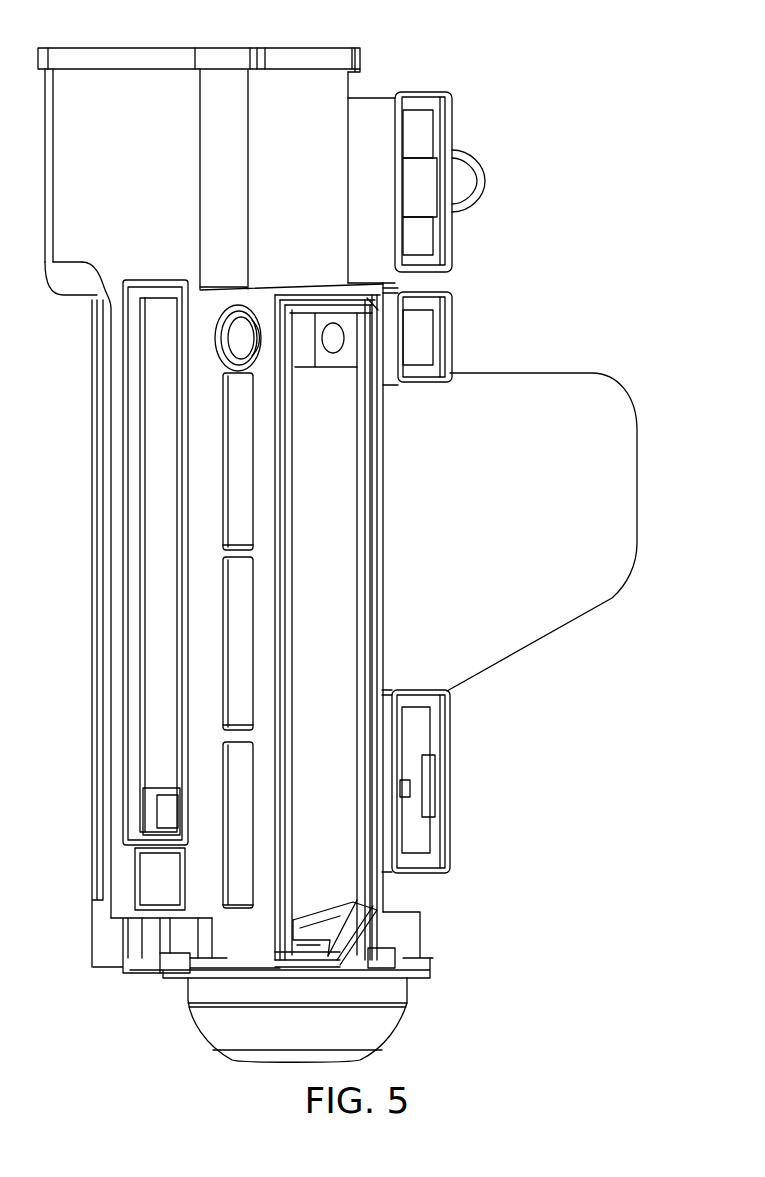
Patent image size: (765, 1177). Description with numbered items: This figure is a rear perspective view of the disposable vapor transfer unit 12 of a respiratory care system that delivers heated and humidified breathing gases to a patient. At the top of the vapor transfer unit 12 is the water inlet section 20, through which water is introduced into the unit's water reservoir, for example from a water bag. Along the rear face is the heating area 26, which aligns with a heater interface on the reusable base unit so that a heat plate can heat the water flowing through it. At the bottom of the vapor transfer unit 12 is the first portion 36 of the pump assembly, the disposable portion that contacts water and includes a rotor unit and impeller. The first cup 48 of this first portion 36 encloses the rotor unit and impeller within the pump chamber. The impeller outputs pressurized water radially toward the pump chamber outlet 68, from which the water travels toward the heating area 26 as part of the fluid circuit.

The vapor transfer unit 12 is at (293, 68).
The water inlet section 20 is at (122, 47).
The heating area 26 is at (328, 463).
The first portion 36 is at (311, 1010).
The first cup 48 is at (213, 1030).
The pump chamber outlet 68 is at (296, 930).